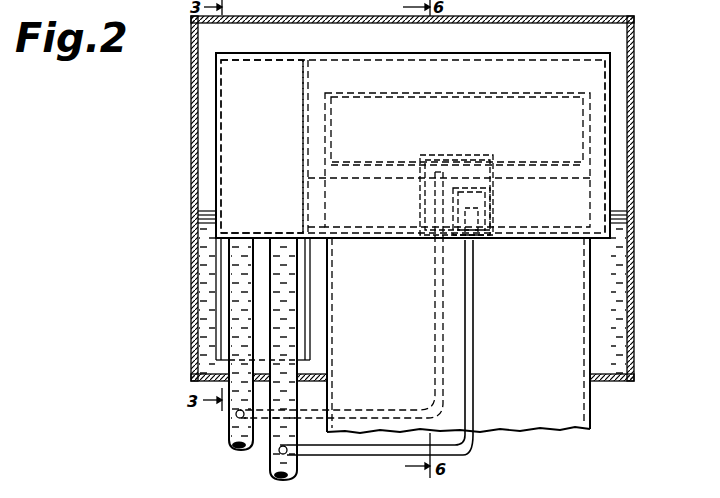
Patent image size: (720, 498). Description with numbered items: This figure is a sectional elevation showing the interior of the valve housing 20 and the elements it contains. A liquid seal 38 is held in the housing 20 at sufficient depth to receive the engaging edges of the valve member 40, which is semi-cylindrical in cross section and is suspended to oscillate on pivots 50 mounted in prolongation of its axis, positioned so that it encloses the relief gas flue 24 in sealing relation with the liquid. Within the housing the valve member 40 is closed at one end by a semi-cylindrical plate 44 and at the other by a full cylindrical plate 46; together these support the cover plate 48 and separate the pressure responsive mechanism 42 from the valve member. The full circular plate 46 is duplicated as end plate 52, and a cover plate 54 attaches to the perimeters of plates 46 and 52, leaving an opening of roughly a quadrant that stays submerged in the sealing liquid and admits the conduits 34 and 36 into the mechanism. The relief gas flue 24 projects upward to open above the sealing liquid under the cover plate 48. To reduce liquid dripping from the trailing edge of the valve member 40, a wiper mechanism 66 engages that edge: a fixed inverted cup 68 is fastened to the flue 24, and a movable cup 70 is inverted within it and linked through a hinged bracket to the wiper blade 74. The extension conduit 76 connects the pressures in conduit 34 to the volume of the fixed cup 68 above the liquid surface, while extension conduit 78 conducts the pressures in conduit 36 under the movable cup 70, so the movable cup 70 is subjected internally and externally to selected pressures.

The valve housing 20 is at (684, 181).
The relief gas flue 24 is at (573, 303).
The conduit 34 is at (238, 305).
The conduit 36 is at (288, 318).
The liquid seal 38 is at (622, 258).
The valve member 40 is at (598, 78).
The pressure responsive mechanism 42 is at (228, 105).
The semi-cylindrical plate 44 is at (612, 128).
The full cylindrical plate 46 is at (312, 80).
The cover plate 48 is at (523, 67).
The pivots 50 is at (200, 212).
The end plate 52 is at (214, 129).
The cover plate 54 is at (254, 73).
The wiper mechanism 66 is at (427, 151).
The fixed inverted cup 68 is at (478, 157).
The movable cup 70 is at (494, 213).
The wiper blade 74 is at (617, 160).
The extension conduit 76 is at (313, 413).
The extension conduit 78 is at (370, 452).